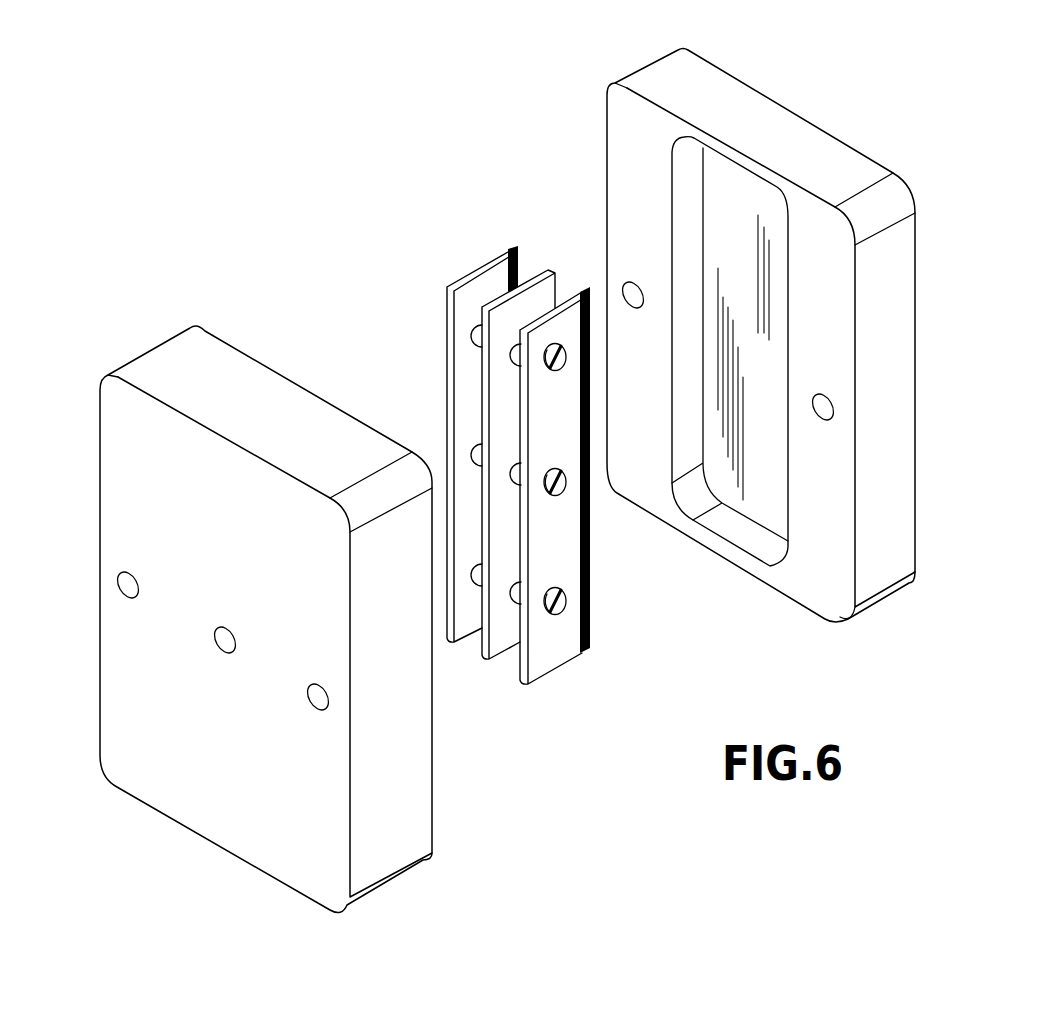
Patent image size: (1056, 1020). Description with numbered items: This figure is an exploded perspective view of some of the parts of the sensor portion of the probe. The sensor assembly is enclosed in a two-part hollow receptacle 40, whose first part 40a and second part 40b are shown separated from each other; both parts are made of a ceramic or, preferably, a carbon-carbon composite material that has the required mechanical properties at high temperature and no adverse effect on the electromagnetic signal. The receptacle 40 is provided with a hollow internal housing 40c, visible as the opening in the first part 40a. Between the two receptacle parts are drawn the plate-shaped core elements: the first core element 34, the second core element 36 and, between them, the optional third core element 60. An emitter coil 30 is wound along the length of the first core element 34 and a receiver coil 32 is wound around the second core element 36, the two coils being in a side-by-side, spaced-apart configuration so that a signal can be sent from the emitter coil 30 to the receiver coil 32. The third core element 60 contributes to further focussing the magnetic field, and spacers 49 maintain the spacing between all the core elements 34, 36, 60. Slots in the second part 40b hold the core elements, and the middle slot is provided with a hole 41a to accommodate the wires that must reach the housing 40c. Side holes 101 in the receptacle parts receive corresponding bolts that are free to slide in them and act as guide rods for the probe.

The receptacle 40 is at (408, 109).
The first part of the receptacle 40a is at (630, 140).
The second part of the receptacle 40b is at (227, 358).
The hollow internal housing 40c is at (757, 540).
The hole 41a is at (217, 652).
The side holes 101 is at (125, 595).
The emitter coil 30 is at (510, 252).
The first core element 34 is at (448, 357).
The third core element 60 is at (495, 647).
The spacers 49 is at (513, 597).
The second core element 36 is at (540, 662).
The receiver coil 32 is at (585, 653).